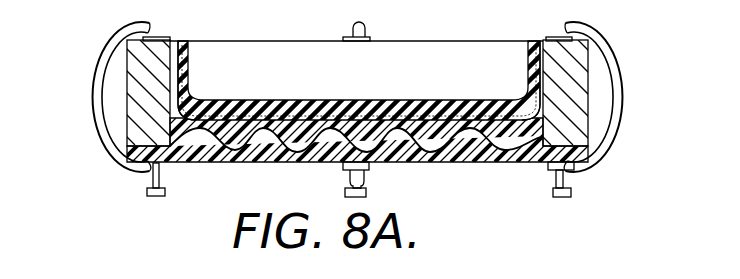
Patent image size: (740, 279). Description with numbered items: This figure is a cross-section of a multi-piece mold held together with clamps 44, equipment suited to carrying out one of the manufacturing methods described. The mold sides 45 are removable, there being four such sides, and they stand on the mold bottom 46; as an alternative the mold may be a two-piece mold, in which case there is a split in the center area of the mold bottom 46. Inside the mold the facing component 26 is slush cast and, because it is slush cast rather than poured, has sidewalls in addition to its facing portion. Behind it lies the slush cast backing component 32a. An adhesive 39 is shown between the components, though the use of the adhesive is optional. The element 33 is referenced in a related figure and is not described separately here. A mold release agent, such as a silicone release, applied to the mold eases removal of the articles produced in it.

The facing component 26 is at (181, 55).
The slush cast backing component 32a is at (338, 100).
The end cap plate 33 is at (368, 20).
The adhesive 39 is at (520, 115).
The clamps 44 is at (97, 125).
The mold sides 45 is at (134, 72).
The mold bottom 46 is at (462, 153).